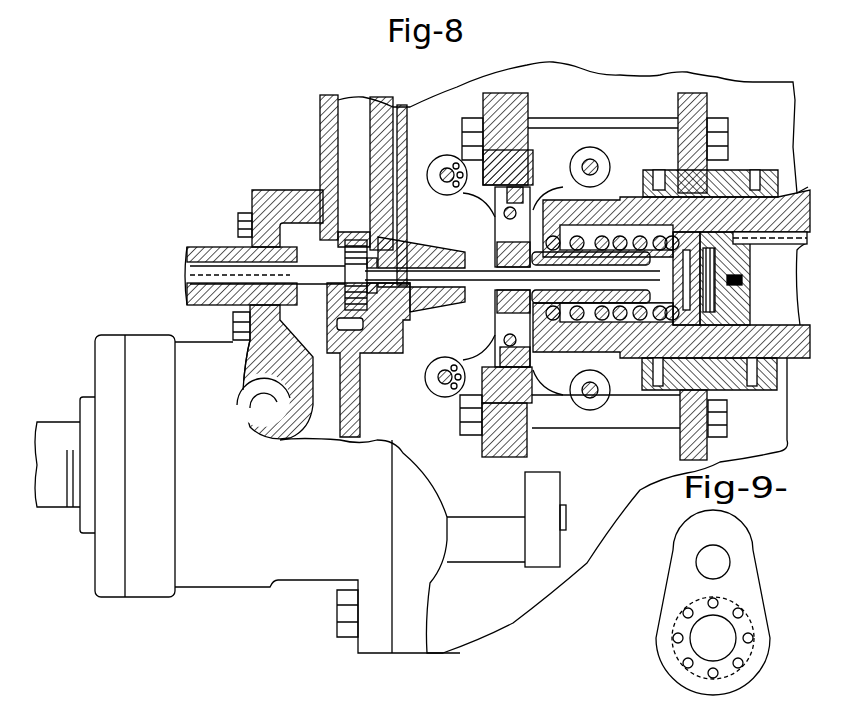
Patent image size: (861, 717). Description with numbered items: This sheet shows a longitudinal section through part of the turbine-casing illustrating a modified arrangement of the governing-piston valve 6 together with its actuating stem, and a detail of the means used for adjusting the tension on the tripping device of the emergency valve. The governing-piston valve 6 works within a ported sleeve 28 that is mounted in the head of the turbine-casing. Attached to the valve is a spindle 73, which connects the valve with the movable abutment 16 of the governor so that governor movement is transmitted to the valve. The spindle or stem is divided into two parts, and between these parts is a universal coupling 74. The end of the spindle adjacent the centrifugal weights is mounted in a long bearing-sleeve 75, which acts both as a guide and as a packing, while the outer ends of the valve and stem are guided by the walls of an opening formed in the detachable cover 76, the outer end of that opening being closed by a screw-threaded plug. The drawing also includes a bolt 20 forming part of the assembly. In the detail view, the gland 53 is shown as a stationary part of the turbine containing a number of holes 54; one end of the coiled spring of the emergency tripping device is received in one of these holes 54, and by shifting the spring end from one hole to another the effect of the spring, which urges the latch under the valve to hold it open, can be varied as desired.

In FIG. 8, the governing-piston valve 6 is at (325, 292).
In FIG. 8, the movable abutment 16 is at (748, 301).
In FIG. 8, the bolt 20 is at (620, 128).
In FIG. 8, the ported sleeve 28 is at (327, 233).
In FIG. 8, the spindle 73 is at (473, 287).
In FIG. 8, the universal coupling 74 is at (555, 318).
In FIG. 8, the bearing-sleeve 75 is at (433, 253).
In FIG. 8, the detachable cover 76 is at (212, 250).
In FIG. 9, the gland 53 is at (683, 583).
In FIG. 9, the holes 54 is at (677, 640).